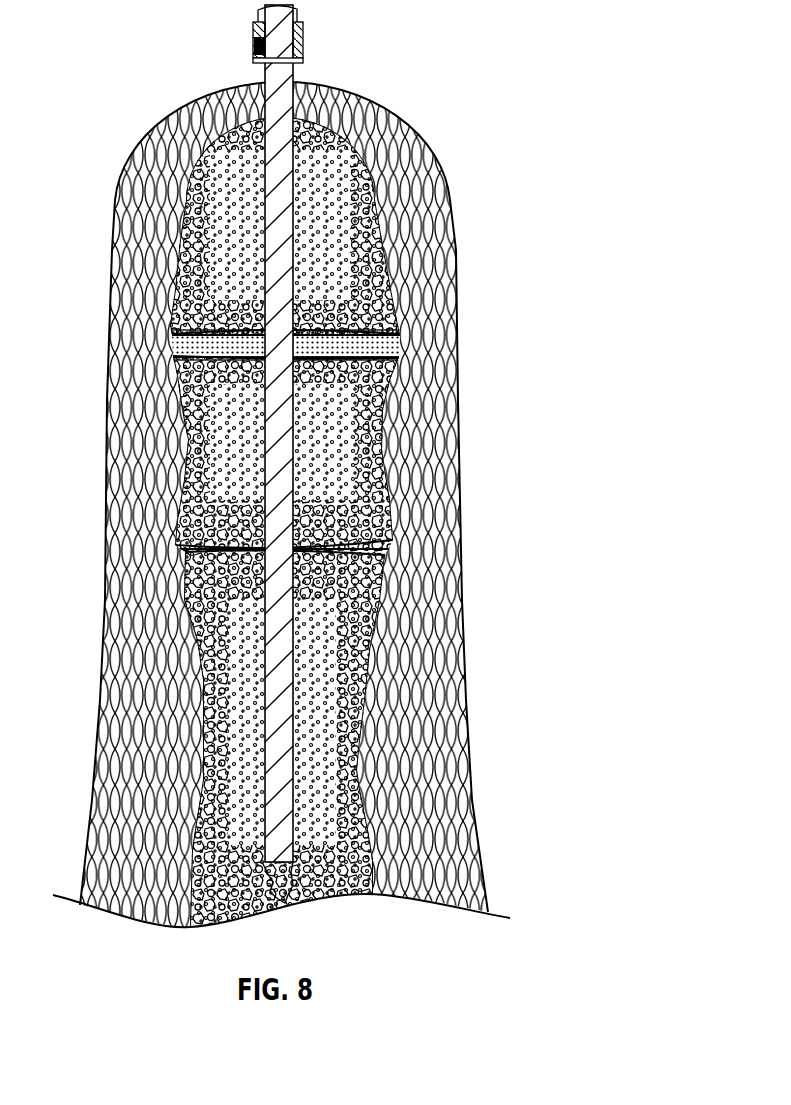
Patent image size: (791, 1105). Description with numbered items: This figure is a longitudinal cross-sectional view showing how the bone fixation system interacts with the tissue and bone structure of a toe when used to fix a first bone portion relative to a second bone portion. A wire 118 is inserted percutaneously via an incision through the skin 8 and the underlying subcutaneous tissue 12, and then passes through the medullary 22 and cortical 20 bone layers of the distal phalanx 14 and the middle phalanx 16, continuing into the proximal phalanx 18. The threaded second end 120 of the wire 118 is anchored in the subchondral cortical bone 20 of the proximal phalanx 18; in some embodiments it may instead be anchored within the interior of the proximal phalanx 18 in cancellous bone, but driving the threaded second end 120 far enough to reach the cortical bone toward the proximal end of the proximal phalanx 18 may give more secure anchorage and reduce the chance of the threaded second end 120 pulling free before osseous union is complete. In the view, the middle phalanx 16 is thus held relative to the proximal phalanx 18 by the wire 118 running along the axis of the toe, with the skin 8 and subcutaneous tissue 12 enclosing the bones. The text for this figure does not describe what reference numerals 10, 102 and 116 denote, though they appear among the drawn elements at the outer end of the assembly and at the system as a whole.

The skin 8 is at (281, 500).
The implant assembly 10 is at (307, 472).
The subcutaneous tissue 12 is at (410, 150).
The distal phalanx 14 is at (188, 228).
The middle phalanx 16 is at (212, 424).
The proximal phalanx 18 is at (212, 650).
The cortical bone 20 is at (353, 860).
The medullary bone 22 is at (323, 667).
The nut 102 is at (298, 50).
The central rod 116 is at (303, 115).
The wire 118 is at (353, 387).
The threaded second end 120 is at (240, 860).